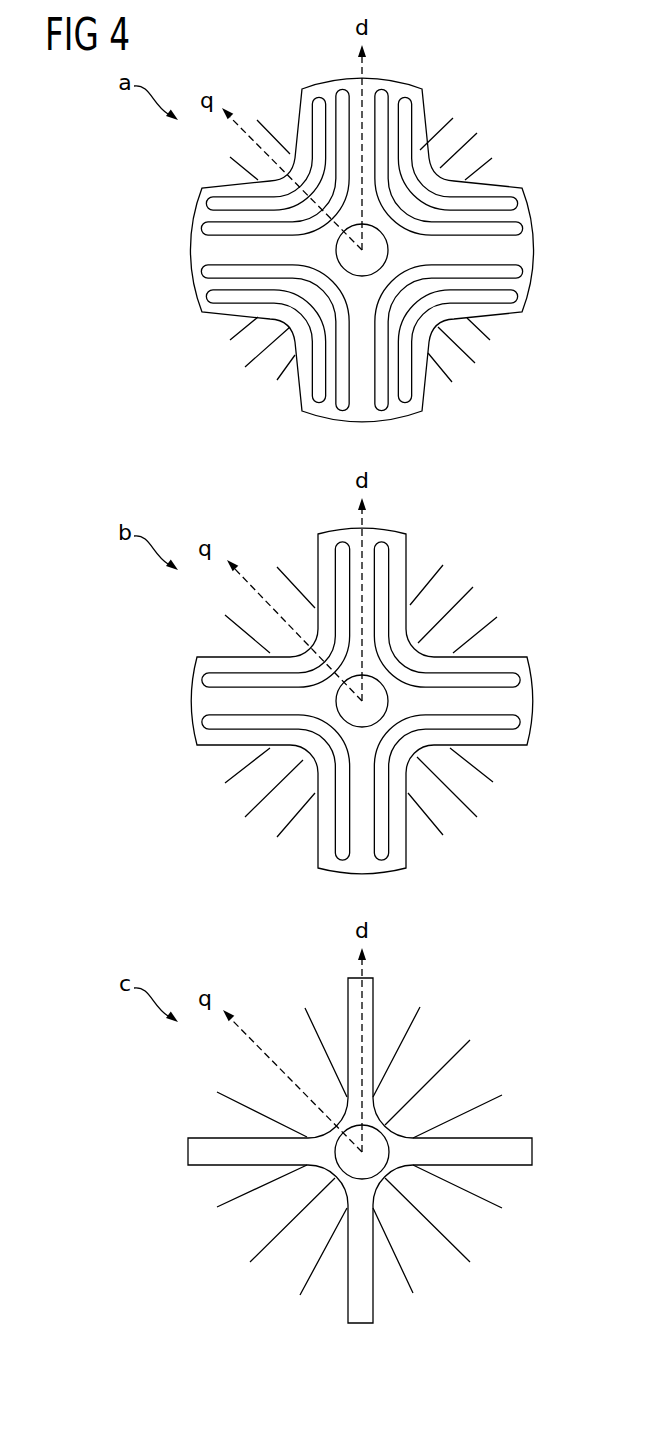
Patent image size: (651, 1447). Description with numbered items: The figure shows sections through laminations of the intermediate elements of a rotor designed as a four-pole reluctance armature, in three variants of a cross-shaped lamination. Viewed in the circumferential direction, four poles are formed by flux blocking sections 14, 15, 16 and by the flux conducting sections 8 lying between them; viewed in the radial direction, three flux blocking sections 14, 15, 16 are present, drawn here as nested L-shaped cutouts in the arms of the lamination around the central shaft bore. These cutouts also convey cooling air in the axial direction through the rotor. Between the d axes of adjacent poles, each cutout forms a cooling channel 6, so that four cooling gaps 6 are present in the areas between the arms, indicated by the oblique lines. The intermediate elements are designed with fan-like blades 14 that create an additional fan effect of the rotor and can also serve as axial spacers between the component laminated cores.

The cooling channel 6 is at (459, 135).
The flux conducting section 8 is at (500, 215).
The flux blocking section 14 is at (282, 127).
The flux blocking section 15 is at (213, 205).
The flux blocking section 16 is at (207, 230).